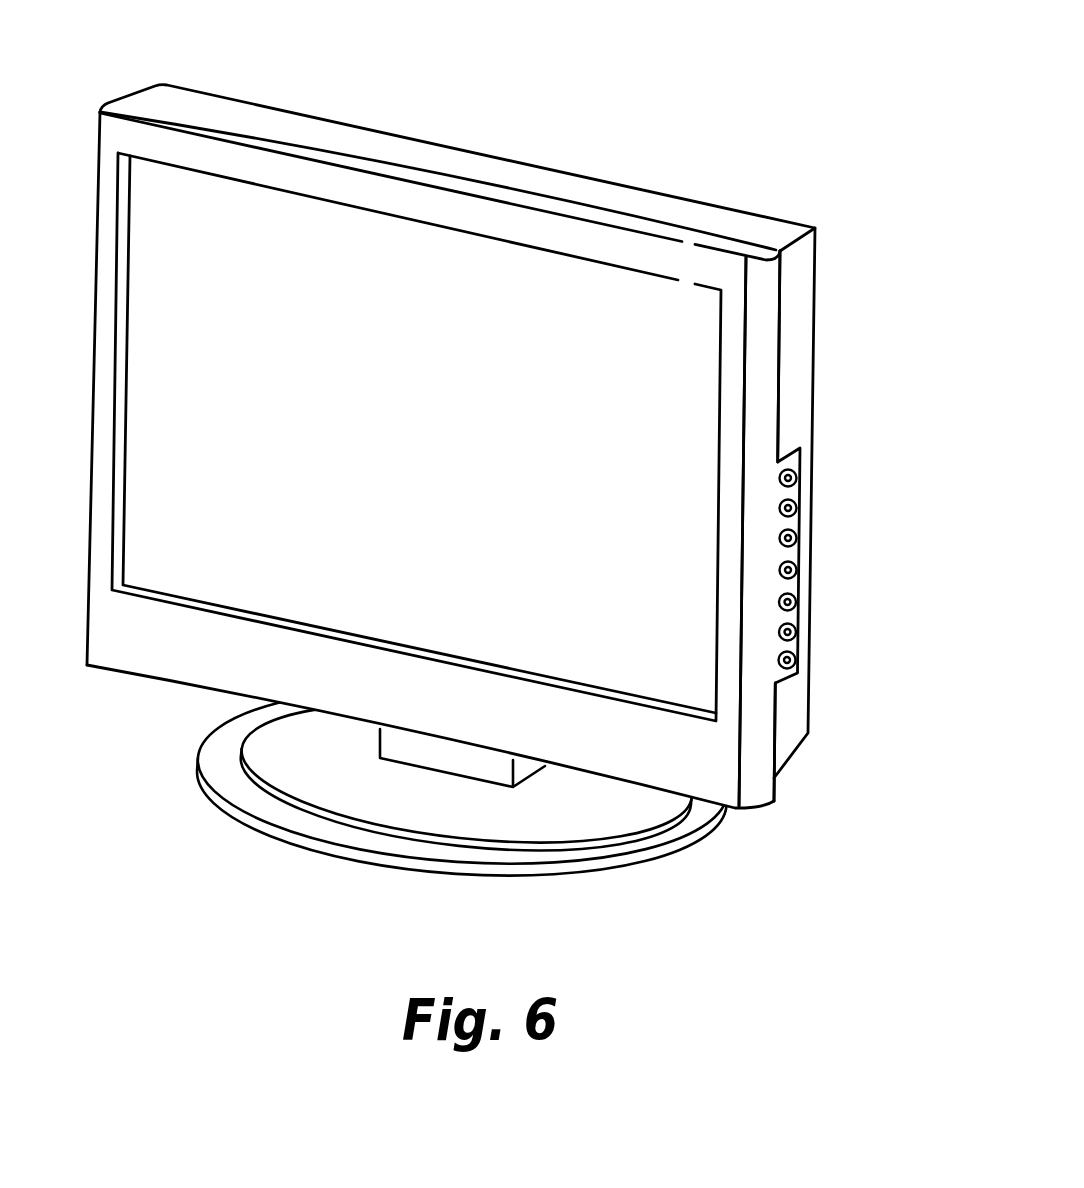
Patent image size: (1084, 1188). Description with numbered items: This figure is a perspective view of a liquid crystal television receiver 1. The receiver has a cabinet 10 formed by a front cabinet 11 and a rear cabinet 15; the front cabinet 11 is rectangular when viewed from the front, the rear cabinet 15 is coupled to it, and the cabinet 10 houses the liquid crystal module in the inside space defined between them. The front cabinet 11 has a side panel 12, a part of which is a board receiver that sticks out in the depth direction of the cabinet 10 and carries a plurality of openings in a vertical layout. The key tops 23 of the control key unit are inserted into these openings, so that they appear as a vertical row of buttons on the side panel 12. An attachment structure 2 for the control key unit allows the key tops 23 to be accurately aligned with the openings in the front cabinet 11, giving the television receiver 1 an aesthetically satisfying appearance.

The liquid crystal television receiver 1 is at (507, 445).
The cabinet 10 is at (507, 404).
The front cabinet 11 is at (513, 200).
The rear cabinet 15 is at (642, 200).
The side panel 12 is at (765, 337).
The key tops 23 is at (800, 478).
The attachment structure 2 is at (803, 788).